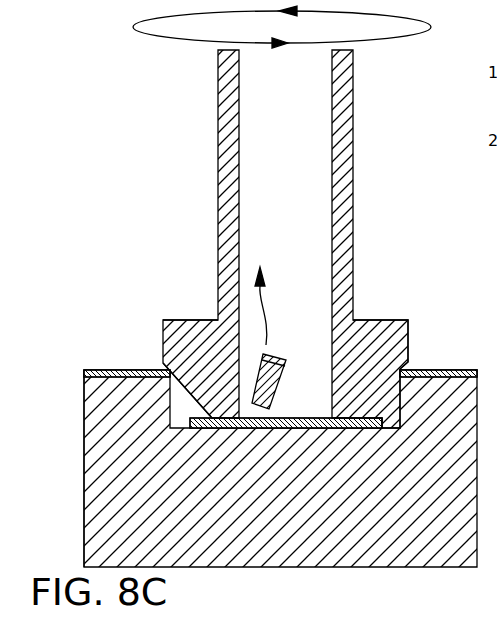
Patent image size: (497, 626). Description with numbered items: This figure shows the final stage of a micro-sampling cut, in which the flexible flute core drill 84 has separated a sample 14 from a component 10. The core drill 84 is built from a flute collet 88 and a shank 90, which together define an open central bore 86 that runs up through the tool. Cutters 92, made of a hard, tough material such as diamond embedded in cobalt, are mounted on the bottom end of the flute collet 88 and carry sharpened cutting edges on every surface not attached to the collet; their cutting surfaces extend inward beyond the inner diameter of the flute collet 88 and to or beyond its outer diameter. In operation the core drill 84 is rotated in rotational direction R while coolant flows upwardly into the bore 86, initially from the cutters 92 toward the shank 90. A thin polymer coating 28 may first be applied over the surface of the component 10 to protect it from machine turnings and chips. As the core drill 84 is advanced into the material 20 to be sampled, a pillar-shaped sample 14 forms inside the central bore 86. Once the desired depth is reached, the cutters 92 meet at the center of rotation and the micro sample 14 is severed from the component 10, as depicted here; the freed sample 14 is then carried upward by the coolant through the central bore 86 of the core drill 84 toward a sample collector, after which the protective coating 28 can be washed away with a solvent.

The component 10 is at (84, 455).
The sample 14 is at (278, 391).
The material 20 is at (103, 549).
The polymer coating 28 is at (458, 371).
The flexible flute core drill 84 is at (185, 186).
The central bore 86 is at (293, 215).
The flute collet 88 is at (409, 332).
The shank 90 is at (353, 243).
The cutters 92 is at (190, 416).
The rotational direction R is at (184, 43).